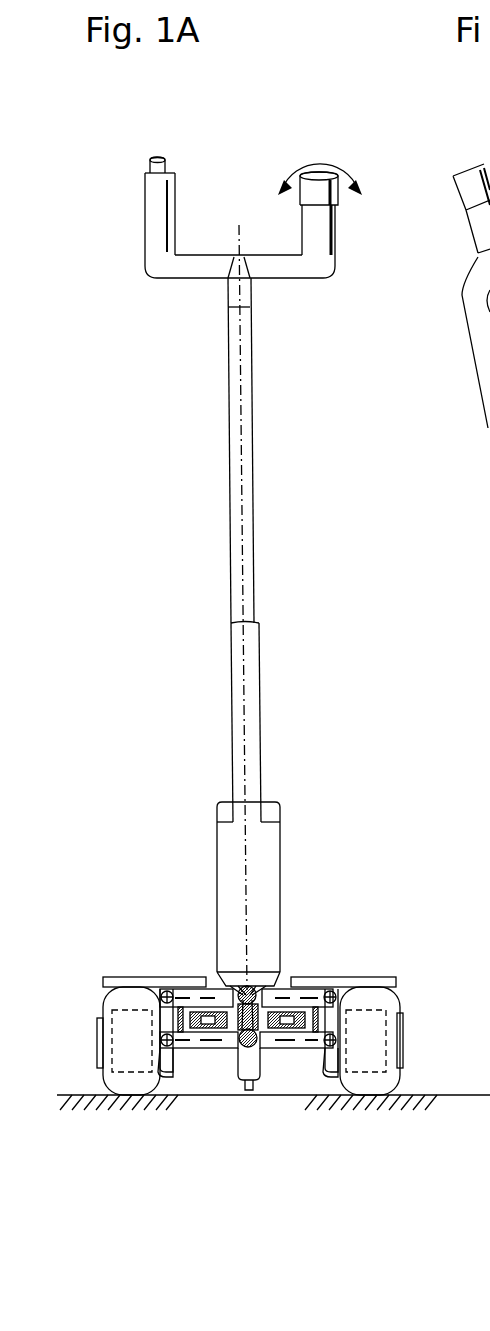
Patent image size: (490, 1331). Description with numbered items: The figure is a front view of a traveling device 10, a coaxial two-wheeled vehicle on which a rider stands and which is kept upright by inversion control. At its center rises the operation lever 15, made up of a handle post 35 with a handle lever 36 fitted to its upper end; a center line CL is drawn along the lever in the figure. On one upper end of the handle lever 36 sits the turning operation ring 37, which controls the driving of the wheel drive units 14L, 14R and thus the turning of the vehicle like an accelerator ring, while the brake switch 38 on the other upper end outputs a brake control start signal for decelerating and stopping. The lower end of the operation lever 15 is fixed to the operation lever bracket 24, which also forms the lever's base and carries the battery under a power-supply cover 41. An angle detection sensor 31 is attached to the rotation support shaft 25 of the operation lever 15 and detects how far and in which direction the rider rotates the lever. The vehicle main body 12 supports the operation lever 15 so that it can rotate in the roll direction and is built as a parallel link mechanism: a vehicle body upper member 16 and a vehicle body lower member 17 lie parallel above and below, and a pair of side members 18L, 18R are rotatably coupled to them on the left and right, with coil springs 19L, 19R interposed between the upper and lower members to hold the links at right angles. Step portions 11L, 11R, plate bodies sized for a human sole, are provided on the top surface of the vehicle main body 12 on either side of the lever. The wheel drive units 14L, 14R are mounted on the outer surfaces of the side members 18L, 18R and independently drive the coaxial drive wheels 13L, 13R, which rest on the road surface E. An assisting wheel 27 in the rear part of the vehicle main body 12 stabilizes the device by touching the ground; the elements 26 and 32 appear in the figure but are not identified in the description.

The traveling device 10 is at (138, 578).
The center line CL is at (240, 412).
The operation lever 15 is at (178, 147).
The handle lever 36 is at (295, 273).
The brake switch 38 is at (147, 167).
The turning operation ring 37 is at (334, 196).
The handle post 35 is at (255, 710).
The power-supply cover 41 is at (223, 837).
The operation lever bracket 24 is at (241, 978).
The connecting member 32 is at (243, 980).
The angle detection sensor 31 is at (257, 978).
The rotation support shaft 25 is at (258, 982).
The vehicle body upper member 16 is at (308, 978).
The vehicle body lower member 17 is at (298, 1052).
The coil spring 19R is at (198, 1053).
The coil spring 19L is at (281, 1053).
The side member 18R is at (170, 1075).
The side member 18L is at (333, 1078).
The stand body 26 is at (241, 1083).
The assisting wheel 27 is at (249, 1092).
The vehicle main body 12 is at (215, 1072).
The step portion 11R is at (131, 977).
The step portion 11L is at (367, 977).
The drive wheel 13R is at (115, 1000).
The drive wheel 13L is at (385, 998).
The wheel drive unit 14R is at (97, 1018).
The wheel drive unit 14L is at (397, 1013).
The road surface E is at (467, 1095).